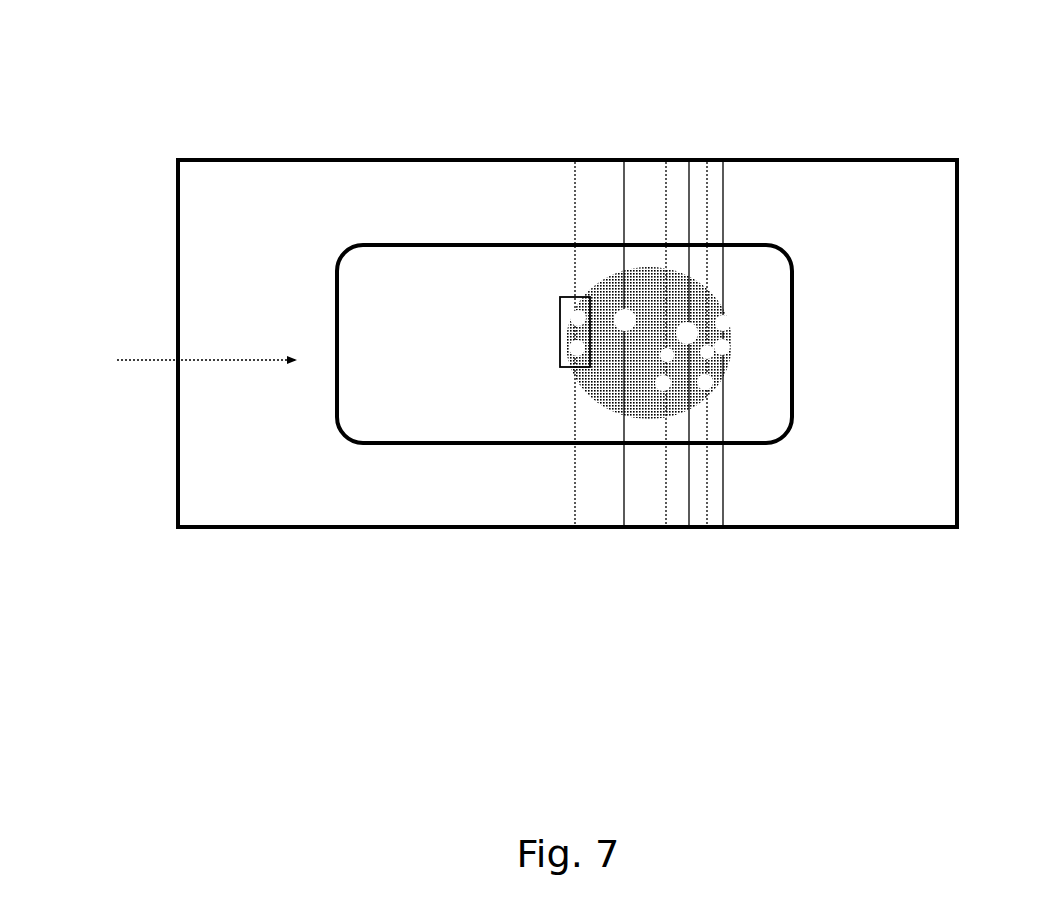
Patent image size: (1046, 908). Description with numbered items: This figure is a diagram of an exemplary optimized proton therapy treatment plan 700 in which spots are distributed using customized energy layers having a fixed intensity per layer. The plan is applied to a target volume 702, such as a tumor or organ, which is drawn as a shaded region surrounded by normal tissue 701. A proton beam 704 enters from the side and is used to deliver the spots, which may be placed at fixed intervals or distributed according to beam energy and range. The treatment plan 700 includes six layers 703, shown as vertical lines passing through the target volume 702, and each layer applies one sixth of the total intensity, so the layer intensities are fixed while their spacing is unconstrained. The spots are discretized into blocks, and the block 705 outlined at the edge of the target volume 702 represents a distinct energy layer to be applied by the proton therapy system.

The proton therapy treatment plan 700 is at (226, 104).
The normal tissue 701 is at (497, 276).
The target volume 702 is at (719, 298).
The layers 703 is at (676, 516).
The proton beam 704 is at (169, 330).
The block 705 is at (557, 368).